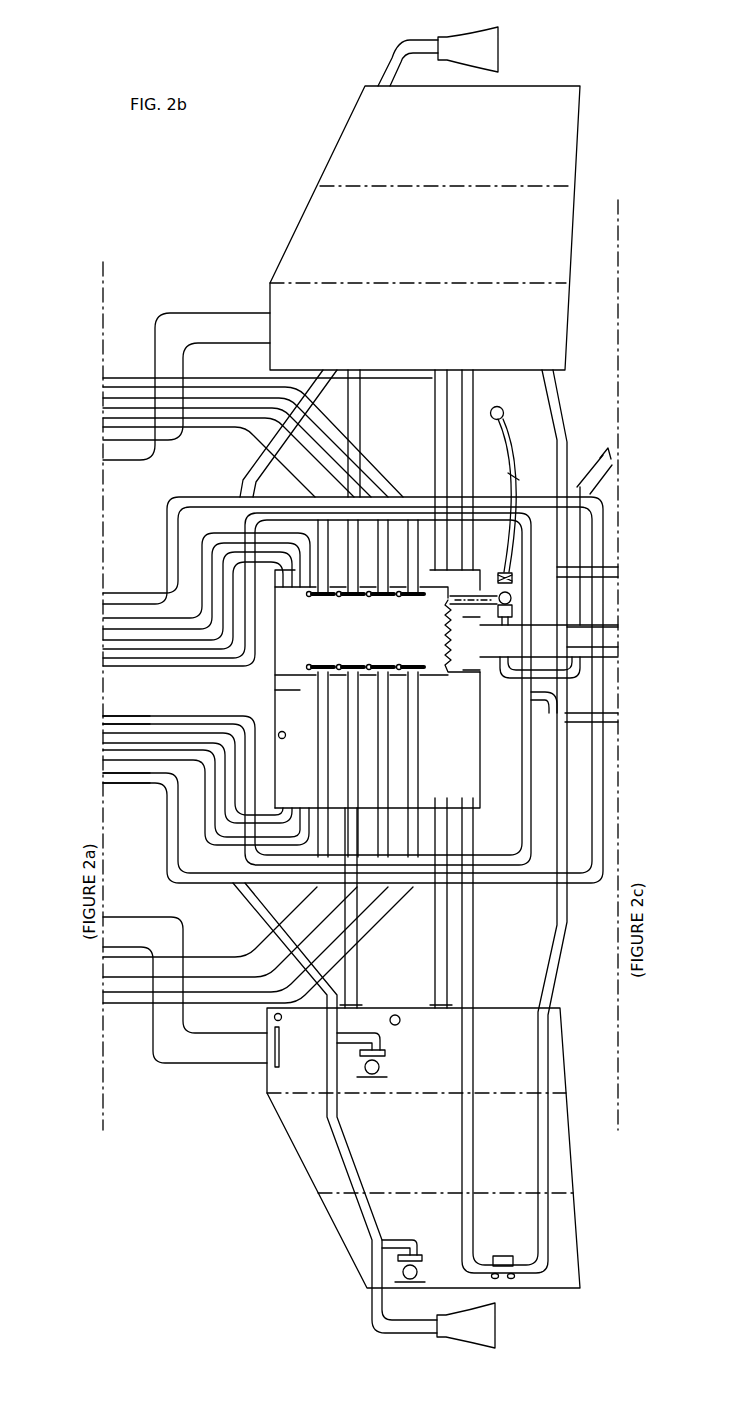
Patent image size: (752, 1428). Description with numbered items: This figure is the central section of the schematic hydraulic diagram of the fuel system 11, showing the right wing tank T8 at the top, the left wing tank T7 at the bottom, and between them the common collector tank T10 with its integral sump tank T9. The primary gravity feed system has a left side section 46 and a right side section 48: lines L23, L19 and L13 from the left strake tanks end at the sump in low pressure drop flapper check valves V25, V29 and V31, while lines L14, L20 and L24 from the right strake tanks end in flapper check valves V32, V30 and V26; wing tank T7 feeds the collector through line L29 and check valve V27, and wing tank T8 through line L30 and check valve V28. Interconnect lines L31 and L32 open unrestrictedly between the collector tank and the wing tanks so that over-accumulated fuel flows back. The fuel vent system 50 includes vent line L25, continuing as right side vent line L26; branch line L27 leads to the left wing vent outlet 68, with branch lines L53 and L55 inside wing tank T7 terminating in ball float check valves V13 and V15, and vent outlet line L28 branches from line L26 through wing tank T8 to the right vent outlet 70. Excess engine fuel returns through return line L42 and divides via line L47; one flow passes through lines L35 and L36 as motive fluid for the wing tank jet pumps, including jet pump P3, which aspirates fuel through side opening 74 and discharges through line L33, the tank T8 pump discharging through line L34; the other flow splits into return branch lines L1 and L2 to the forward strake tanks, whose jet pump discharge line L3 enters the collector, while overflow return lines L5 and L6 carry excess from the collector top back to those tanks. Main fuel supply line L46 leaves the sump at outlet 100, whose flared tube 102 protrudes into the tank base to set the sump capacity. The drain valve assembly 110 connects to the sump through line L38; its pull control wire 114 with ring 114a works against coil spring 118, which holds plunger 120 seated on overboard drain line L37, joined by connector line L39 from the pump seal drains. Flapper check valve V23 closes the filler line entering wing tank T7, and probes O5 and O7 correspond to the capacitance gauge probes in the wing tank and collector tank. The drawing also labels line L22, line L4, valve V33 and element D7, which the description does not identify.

The right side wing tank T8 is at (297, 243).
The left side wing tank T7 is at (322, 1172).
The sump tank T9 is at (275, 668).
The common collector tank T10 is at (275, 692).
The right vent outlet 70 is at (500, 32).
The left wing vent outlet 68 is at (487, 1348).
The opening 74 is at (507, 1280).
The fuel system 11 is at (210, 1104).
The vent outlet line L28 is at (390, 48).
The line L22 is at (103, 450).
The gravity feed line L14 is at (103, 380).
The gravity feed line L20 is at (103, 402).
The gravity feed line L24 is at (103, 422).
The right side fuel vent line L26 is at (167, 535).
The fuel vent line L25 is at (103, 780).
The overflow return line L6 is at (103, 621).
The line L4 is at (103, 644).
The fuel return branch line L2 is at (103, 660).
The fuel return branch line L1 is at (103, 719).
The jet pump discharge line L3 is at (103, 738).
The overflow return line L5 is at (103, 757).
The gravity feed line L30 is at (360, 415).
The interconnect line L32 is at (435, 412).
The jet pump discharge line L34 is at (473, 415).
The motive fuel line L36 is at (553, 390).
The motive fuel line L35 is at (553, 992).
The discharge line L33 is at (473, 998).
The interconnect line L31 is at (433, 994).
The gravity feed line L29 is at (352, 982).
The branch vent line L27 is at (255, 918).
The sump drain line L38 is at (467, 622).
The common connector line L39 is at (610, 570).
The main fuel supply line L46 is at (606, 647).
The overboard drain line L37 is at (590, 666).
The return fuel dividing line L47 is at (535, 714).
The fuel return line L42 is at (610, 716).
The gravity feed line L23 is at (103, 960).
The gravity feed line L19 is at (103, 982).
The gravity feed line L13 is at (103, 1000).
The branch vent line L53 is at (384, 1040).
The branch vent line L55 is at (392, 1242).
The low pressure drop flapper check valve V25 is at (318, 664).
The low pressure drop flapper check valve V26 is at (312, 597).
The low pressure drop flapper check valve V27 is at (356, 655).
The low pressure drop flapper check valve V28 is at (347, 572).
The low pressure drop flapper check valve V29 is at (390, 664).
The low pressure drop flapper check valve V30 is at (381, 572).
The low pressure drop flapper check valve V31 is at (408, 664).
The low pressure drop flapper check valve V32 is at (415, 572).
The valve V33 is at (510, 575).
The low pressure drop flapper check valve V23 is at (280, 1056).
The ball float check valve V13 is at (372, 1076).
The ball float check valve V15 is at (428, 1260).
The capacitance gauge probe O5 is at (282, 1016).
The capacitance gauge probe O7 is at (284, 731).
The drain D7 is at (390, 1020).
The jet pump P3 is at (512, 1255).
The left side section of primary gravity feed system 46 is at (415, 898).
The right side section of primary gravity feed system 48 is at (403, 458).
The fuel vent system 50 is at (124, 788).
The fuel tank outlet 100 is at (456, 680).
The flared aluminum tube 102 is at (470, 672).
The drain valve assembly 110 is at (493, 575).
The pull control wire 114 is at (514, 452).
The ring 114a is at (504, 414).
The coil spring 118 is at (511, 585).
The plunger 120 is at (512, 605).